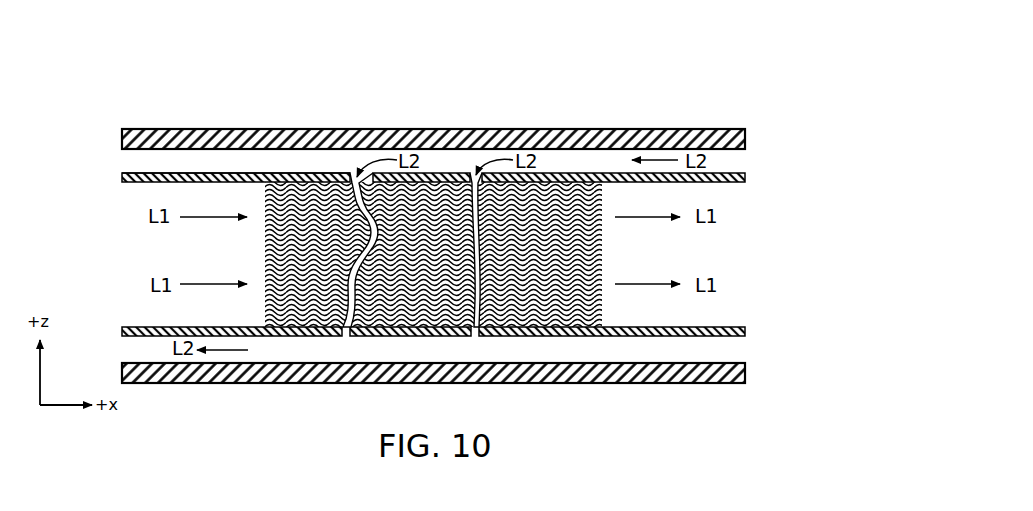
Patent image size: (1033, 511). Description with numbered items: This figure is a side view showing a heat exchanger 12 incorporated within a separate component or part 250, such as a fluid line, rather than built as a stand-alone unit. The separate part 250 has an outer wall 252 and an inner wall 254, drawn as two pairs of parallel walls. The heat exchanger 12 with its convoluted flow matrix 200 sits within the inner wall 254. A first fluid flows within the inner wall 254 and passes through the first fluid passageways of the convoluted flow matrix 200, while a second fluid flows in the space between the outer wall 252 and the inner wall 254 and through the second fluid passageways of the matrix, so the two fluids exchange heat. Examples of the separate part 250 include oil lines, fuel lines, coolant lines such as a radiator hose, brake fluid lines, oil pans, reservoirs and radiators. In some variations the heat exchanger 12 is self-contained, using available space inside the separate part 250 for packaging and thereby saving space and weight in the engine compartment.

The heat exchanger 12 is at (296, 170).
The convoluted flow matrix 200 is at (258, 236).
The separate component or part 250 is at (581, 127).
The outer wall 252 is at (470, 129).
The inner wall 254 is at (593, 337).